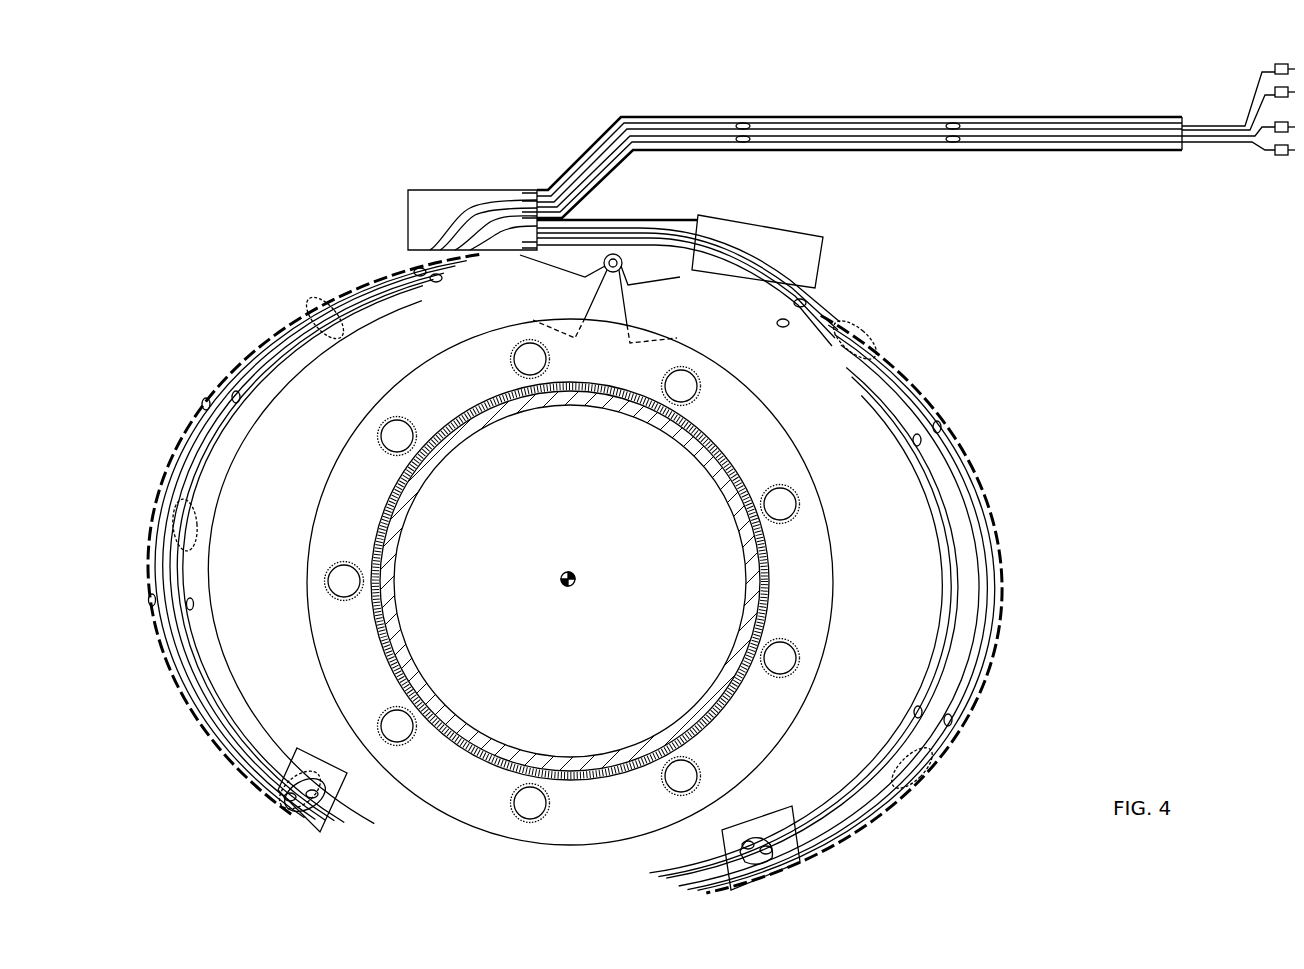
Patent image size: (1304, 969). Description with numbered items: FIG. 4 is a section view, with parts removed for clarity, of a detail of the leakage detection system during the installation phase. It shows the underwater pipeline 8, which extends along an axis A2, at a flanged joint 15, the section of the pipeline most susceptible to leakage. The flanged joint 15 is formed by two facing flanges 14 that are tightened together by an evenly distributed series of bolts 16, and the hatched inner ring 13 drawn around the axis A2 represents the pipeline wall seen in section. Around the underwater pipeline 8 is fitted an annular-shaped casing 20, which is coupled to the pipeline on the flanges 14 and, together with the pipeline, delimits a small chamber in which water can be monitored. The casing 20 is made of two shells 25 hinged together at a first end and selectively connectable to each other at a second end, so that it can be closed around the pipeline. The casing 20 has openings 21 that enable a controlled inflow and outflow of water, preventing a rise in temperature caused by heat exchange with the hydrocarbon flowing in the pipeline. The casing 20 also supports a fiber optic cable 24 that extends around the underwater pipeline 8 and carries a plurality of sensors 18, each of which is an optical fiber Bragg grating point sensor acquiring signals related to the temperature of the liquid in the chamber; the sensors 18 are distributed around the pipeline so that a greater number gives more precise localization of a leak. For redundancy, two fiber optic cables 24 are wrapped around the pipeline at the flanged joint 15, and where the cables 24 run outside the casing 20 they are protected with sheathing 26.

The underwater pipeline 8 is at (683, 852).
The hub ring 13 is at (674, 726).
The flange 14 is at (558, 846).
The flanged joint 15 is at (495, 852).
The bolts 16 is at (524, 358).
The sensor 18 is at (420, 280).
The casing 20 is at (1035, 604).
The openings 21 is at (325, 330).
The fiber optic cable 24 is at (1225, 123).
The shells 25 is at (200, 722).
The sheathing 26 is at (952, 114).
The axis A2 is at (570, 572).